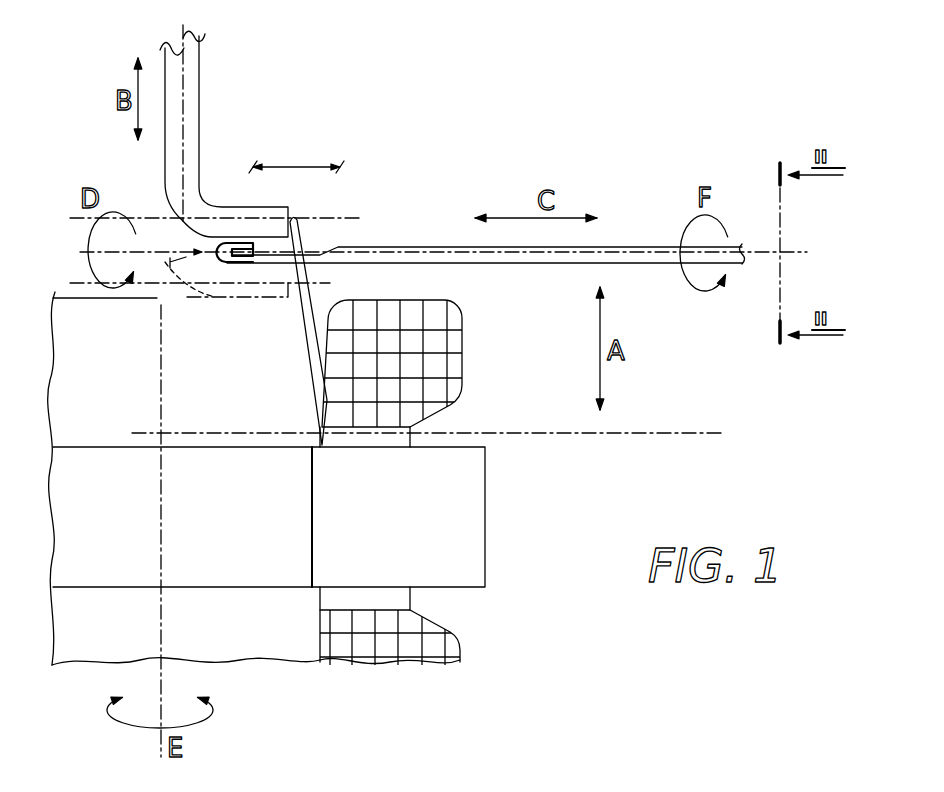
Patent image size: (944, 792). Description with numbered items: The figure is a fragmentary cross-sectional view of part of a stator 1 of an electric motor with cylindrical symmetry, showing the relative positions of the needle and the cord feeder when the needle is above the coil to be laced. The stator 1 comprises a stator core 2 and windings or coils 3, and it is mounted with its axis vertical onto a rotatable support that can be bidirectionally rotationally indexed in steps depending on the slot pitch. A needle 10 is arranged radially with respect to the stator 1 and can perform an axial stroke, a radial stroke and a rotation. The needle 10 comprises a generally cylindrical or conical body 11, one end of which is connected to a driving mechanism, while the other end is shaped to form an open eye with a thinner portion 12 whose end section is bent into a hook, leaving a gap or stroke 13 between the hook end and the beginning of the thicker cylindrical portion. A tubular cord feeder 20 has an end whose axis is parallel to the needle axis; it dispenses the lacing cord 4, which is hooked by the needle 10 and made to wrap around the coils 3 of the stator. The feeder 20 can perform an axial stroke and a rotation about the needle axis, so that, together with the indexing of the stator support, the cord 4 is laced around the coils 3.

The stator 1 is at (250, 526).
The stator core 2 is at (420, 545).
The coils 3 is at (392, 318).
The lacing cord 4 is at (308, 328).
The needle 10 is at (645, 245).
The body 11 is at (527, 265).
The thinner portion 12 is at (240, 262).
The gap 13 is at (296, 151).
The tubular cord feeder 20 is at (247, 212).